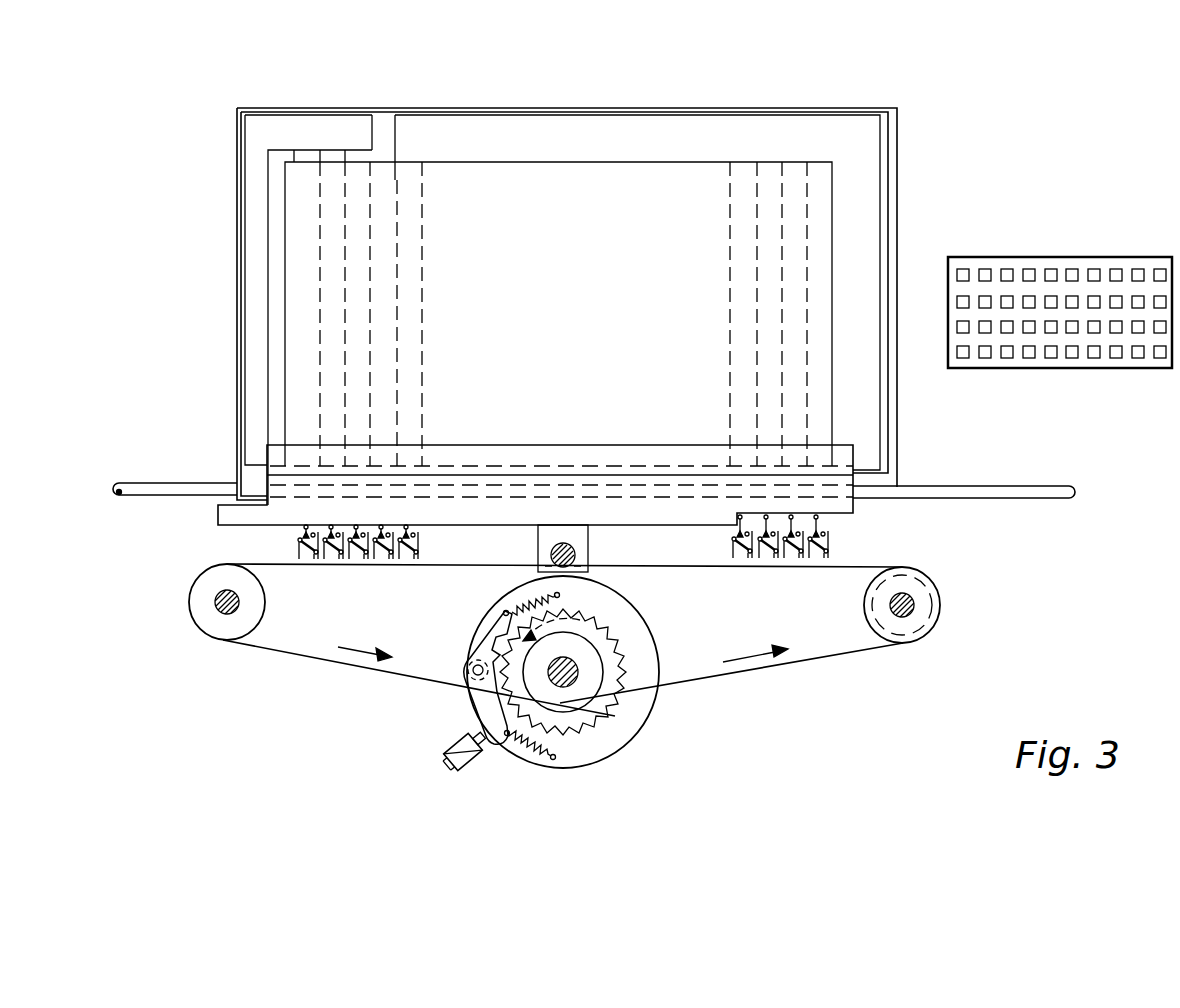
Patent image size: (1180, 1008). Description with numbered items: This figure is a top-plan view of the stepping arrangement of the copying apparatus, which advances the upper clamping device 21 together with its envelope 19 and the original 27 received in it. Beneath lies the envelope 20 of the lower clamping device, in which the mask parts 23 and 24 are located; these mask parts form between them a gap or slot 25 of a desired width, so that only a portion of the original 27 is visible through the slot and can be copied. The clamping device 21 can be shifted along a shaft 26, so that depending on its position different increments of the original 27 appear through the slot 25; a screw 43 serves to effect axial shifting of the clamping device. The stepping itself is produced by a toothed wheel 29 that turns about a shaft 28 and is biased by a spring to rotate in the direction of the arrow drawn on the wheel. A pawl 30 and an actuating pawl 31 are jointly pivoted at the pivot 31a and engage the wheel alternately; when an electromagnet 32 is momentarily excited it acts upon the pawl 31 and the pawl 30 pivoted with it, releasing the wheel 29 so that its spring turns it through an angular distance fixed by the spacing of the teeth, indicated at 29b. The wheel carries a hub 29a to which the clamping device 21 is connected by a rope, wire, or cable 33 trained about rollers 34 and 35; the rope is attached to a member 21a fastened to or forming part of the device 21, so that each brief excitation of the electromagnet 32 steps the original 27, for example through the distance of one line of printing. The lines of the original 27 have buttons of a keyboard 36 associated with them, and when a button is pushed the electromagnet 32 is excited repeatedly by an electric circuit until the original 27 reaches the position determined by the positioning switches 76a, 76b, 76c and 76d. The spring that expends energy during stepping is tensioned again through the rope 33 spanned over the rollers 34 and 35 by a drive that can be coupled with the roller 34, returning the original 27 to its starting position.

The upper envelope 19 is at (889, 163).
The envelope 20 is at (564, 304).
The upper clamping device 21 is at (847, 458).
The member 21a is at (582, 542).
The mask part 23 is at (268, 127).
The mask part 24 is at (512, 135).
The gap or slot 25 is at (383, 127).
The shaft 26 is at (1048, 498).
The original 27 is at (638, 181).
The shaft 28 is at (577, 718).
The toothed wheel 29 is at (592, 745).
The hub 29a is at (593, 678).
The ratchet teeth 29b is at (587, 614).
The pawl 30 is at (493, 625).
The actuating pawl 31 is at (487, 707).
The pivot 31a is at (473, 667).
The electromagnet 32 is at (467, 767).
The rope, wire, or cable 33 is at (763, 670).
The roller 34 is at (917, 633).
The roller 35 is at (217, 632).
The keyboard 36 is at (1097, 366).
The screw 43 is at (552, 553).
The positioning switch 76a is at (828, 537).
The positioning switch 76b is at (797, 547).
The positioning switch 76c is at (768, 547).
The positioning switch 76d is at (740, 542).